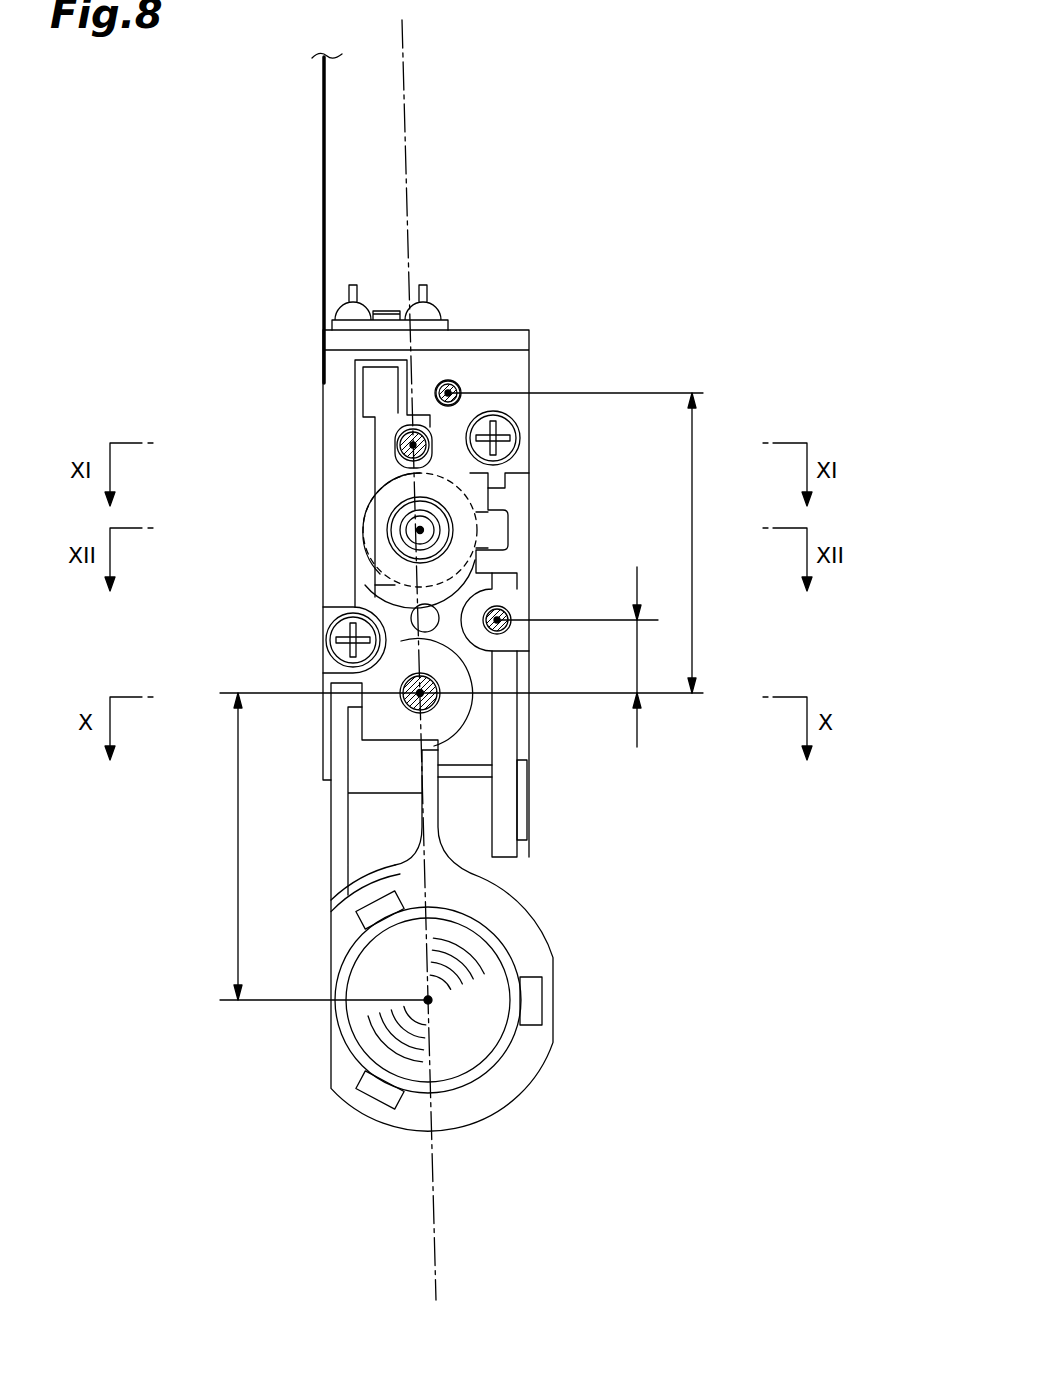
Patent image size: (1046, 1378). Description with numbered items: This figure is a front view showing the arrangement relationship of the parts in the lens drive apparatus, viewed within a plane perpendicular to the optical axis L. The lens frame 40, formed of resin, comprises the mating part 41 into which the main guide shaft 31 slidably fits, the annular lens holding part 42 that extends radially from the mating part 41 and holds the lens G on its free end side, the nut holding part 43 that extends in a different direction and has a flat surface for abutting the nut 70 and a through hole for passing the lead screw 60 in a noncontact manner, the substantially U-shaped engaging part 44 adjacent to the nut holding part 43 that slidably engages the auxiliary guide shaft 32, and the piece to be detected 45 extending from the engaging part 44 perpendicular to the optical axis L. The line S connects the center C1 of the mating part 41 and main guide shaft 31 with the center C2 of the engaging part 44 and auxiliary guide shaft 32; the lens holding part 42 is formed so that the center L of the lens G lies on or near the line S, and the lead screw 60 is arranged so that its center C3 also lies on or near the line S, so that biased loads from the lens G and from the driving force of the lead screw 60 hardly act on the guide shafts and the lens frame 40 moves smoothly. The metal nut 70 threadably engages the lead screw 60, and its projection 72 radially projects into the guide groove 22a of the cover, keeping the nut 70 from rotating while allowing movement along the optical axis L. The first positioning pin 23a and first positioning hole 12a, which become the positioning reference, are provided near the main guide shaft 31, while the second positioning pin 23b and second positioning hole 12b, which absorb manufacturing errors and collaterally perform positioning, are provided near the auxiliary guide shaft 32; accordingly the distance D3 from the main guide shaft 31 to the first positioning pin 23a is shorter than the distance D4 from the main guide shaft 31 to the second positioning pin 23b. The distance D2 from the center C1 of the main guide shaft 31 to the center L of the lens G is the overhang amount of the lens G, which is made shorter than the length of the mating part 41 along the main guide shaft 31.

The line S is at (445, 660).
The piece to be detected 45 is at (346, 483).
The second positioning hole 12b is at (521, 372).
The second positioning pin 23b is at (526, 406).
The auxiliary guide shaft 32 is at (349, 446).
The center of the engaging part C2 is at (532, 438).
The engaging part 44 is at (548, 476).
The guide groove 22a is at (548, 530).
The projection 72 is at (547, 533).
The nut 70 is at (363, 539).
The lead screw 60 is at (355, 530).
The center of the lead screw C3 is at (499, 556).
The nut holding part 43 is at (353, 597).
The first positioning pin 23a is at (540, 618).
The first positioning hole 12a is at (549, 610).
The center of the mating part C1 is at (332, 646).
The main guide shaft 31 is at (355, 707).
The mating part 41 is at (488, 711).
The lens frame 40 is at (463, 921).
The lens holding part 42 is at (485, 1000).
The lens G is at (485, 1000).
The optical axis L is at (504, 960).
The distance D4 is at (589, 543).
The distance D3 is at (586, 657).
The distance D2 is at (461, 846).